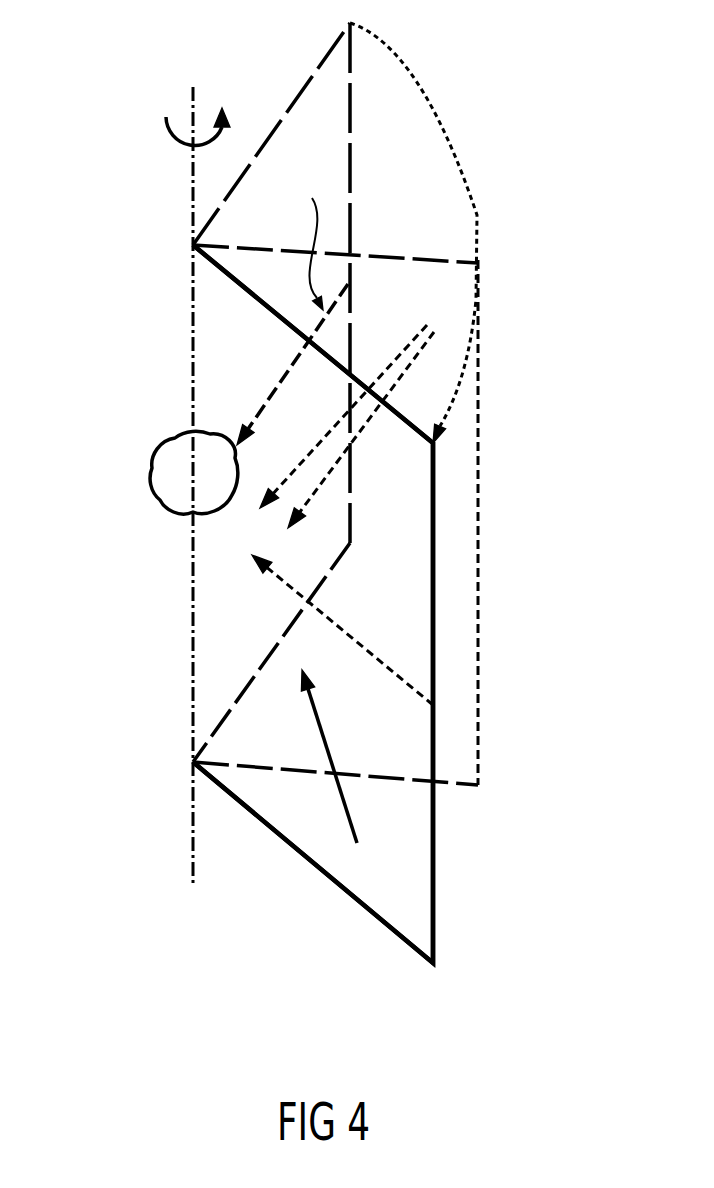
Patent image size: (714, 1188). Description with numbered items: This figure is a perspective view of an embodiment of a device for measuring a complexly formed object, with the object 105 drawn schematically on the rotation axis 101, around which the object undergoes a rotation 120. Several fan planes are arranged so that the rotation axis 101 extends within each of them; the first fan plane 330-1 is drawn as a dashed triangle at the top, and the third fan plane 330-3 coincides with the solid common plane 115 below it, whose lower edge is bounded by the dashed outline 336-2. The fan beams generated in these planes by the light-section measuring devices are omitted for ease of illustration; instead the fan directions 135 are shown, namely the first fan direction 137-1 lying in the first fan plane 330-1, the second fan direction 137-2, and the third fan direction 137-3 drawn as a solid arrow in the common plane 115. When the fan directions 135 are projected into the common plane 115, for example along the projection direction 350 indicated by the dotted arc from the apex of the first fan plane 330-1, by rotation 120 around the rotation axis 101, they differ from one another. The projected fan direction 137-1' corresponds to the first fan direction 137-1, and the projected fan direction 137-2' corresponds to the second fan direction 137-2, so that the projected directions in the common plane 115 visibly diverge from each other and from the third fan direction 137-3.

The rotation axis 101 is at (190, 102).
The rotation 120 is at (163, 138).
The object region 105 is at (150, 467).
The first fan plane 330-1 is at (323, 62).
The mirror edge trajectory 336-2 is at (478, 758).
The common plane 115 is at (345, 897).
The third fan plane 330-3 is at (347, 982).
The projection direction 350 is at (476, 218).
The fan directions 135 is at (309, 238).
The first fan direction 137-1 is at (282, 364).
The projected fan direction 137-2' is at (421, 400).
The second fan direction 137-2 is at (431, 430).
The projected fan direction 137-1' is at (342, 630).
The third fan direction 137-3 is at (353, 823).